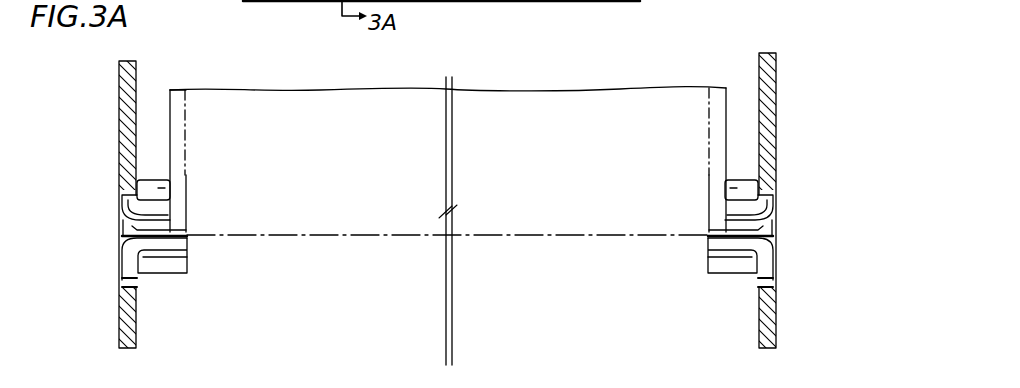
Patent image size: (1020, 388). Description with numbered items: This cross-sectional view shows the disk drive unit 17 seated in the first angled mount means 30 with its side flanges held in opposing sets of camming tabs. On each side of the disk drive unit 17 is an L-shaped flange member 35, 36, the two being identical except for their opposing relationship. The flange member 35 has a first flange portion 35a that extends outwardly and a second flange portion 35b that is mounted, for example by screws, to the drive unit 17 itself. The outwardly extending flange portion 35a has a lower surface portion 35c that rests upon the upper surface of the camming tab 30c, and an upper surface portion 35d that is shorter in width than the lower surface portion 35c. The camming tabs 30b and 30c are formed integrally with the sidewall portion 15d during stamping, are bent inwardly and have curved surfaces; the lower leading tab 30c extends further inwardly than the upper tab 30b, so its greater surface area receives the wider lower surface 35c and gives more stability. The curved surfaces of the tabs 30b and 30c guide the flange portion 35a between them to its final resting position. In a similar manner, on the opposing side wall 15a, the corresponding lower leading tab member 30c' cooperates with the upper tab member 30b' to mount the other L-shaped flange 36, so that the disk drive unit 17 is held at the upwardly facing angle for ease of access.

The opposing side wall 15a is at (778, 108).
The sidewall portion 15d is at (119, 100).
The disk drive unit 17 is at (352, 238).
The first angled mount means 30 is at (211, 85).
The camming tab 30b is at (112, 168).
The upper tab member 30b' is at (776, 188).
The camming tab 30c is at (162, 295).
The lower, leading tab member 30c' is at (701, 260).
The L-shaped flange member 35 is at (185, 133).
The first flange portion 35a is at (132, 228).
The second flange portion 35b is at (170, 98).
The lower surface portion 35c is at (171, 238).
The upper surface portion 35d is at (137, 220).
The L-shaped flange member 36 is at (709, 112).